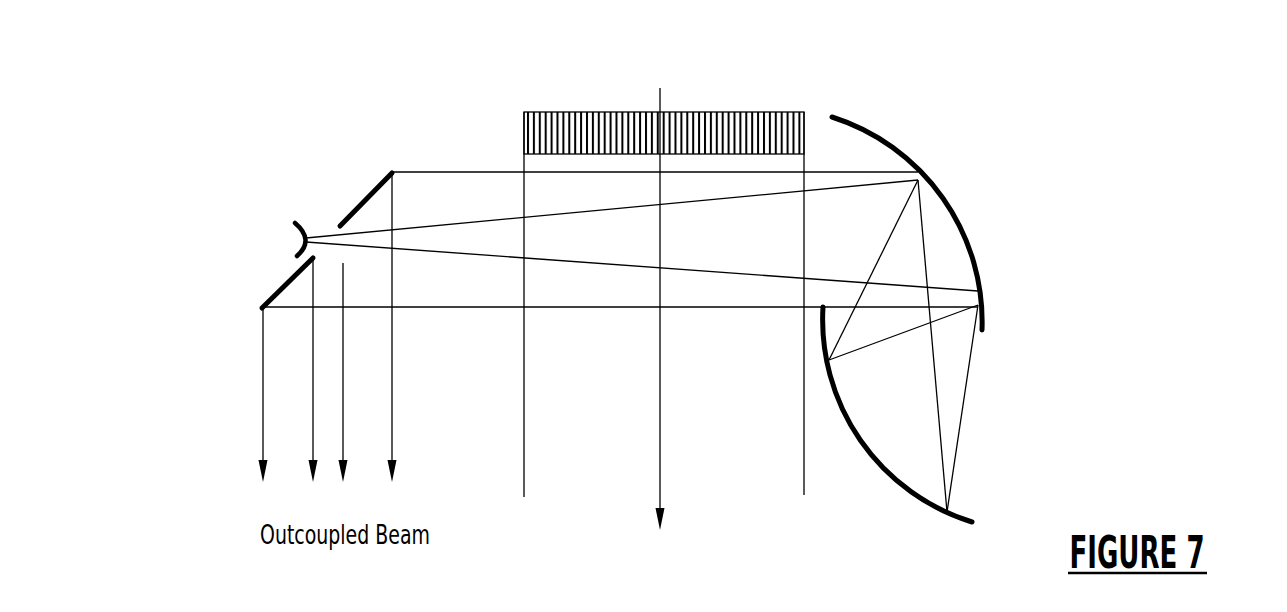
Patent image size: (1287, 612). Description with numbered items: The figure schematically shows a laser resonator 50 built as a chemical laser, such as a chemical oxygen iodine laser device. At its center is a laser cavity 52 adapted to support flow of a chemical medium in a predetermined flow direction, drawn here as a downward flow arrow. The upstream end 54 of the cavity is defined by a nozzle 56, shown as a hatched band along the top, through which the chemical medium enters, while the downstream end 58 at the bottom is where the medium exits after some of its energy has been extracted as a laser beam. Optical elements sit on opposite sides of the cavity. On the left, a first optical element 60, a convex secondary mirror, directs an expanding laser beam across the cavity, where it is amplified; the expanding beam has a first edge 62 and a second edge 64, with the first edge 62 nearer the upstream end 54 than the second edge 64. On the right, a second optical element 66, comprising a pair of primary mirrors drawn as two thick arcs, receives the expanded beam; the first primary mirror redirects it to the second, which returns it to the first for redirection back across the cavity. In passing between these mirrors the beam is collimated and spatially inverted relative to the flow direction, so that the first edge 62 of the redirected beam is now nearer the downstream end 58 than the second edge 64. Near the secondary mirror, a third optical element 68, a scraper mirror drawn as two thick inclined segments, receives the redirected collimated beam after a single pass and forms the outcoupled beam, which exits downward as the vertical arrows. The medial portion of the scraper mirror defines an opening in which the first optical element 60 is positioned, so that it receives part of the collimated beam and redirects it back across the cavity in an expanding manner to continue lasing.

The laser resonator 50 is at (1022, 142).
The laser cavity 52 is at (524, 397).
The upstream end 54 is at (791, 111).
The nozzle 56 is at (524, 112).
The downstream end 58 is at (737, 480).
The first optical element 60 is at (303, 223).
The first edge 62 is at (728, 202).
The second edge 64 is at (620, 175).
The second optical element 66 is at (1000, 358).
The third optical element 68 is at (392, 172).